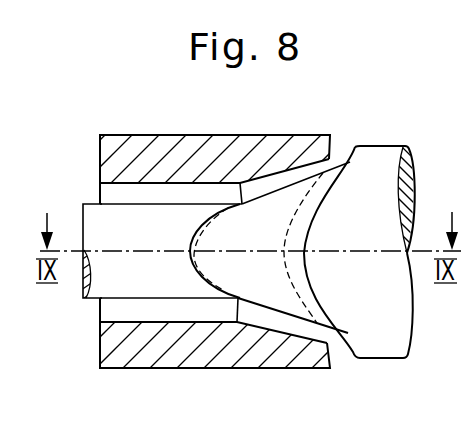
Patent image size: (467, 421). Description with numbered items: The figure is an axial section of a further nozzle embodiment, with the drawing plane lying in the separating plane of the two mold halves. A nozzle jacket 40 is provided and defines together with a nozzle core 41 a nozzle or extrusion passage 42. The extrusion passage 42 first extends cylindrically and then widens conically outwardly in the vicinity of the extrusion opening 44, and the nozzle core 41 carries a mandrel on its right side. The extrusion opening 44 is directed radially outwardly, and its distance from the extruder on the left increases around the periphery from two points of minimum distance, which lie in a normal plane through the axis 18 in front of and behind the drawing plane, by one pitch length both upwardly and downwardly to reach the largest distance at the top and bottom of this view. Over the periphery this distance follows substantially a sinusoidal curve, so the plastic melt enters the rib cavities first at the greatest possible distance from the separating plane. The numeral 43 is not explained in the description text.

The axis 18 is at (131, 253).
The nozzle jacket 40 is at (157, 155).
The nozzle core 41 is at (90, 209).
The extrusion passage 42 is at (108, 309).
The ram 43 is at (388, 160).
The extrusion opening 44 is at (344, 148).